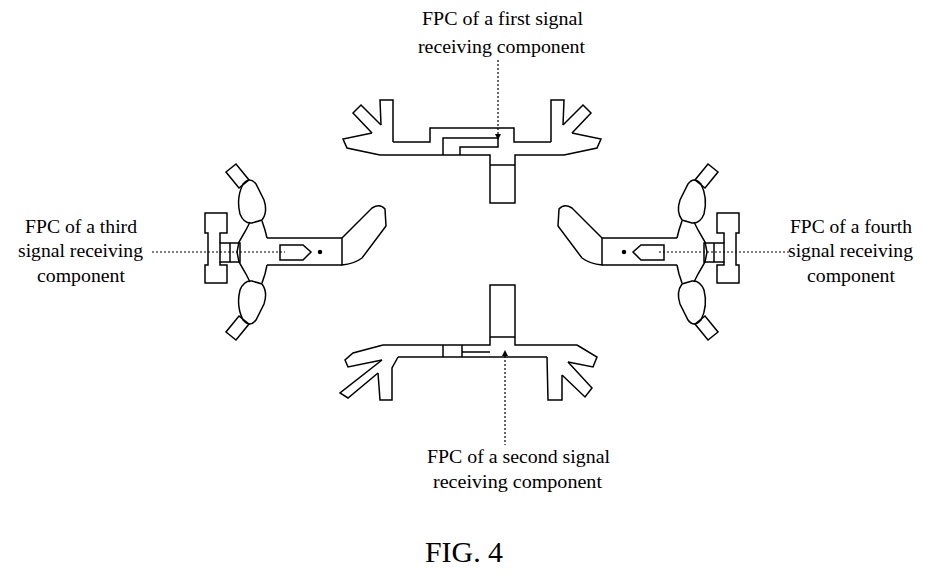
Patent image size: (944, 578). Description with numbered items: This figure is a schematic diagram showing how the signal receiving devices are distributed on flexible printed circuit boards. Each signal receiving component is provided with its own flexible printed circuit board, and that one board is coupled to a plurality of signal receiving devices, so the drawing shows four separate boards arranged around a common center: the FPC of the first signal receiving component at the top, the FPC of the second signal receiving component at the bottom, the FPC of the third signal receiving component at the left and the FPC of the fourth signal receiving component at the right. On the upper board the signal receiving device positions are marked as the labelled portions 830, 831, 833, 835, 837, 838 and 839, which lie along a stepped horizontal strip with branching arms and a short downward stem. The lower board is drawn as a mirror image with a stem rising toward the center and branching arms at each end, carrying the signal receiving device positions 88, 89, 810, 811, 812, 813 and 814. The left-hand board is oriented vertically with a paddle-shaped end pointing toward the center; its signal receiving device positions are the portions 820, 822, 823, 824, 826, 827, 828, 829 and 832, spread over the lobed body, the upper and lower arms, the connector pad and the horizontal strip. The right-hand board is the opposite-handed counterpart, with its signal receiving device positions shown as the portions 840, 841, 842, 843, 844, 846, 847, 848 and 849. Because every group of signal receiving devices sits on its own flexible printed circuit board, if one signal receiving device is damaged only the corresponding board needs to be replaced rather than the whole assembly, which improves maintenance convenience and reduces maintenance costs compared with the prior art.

The main body of FPC of second signal receiving component 88 is at (480, 329).
The left short arm of second FPC 89 is at (353, 356).
The left long arm of second FPC 810 is at (358, 379).
The left stub of second FPC 811 is at (397, 383).
The right stub of second FPC 812 is at (543, 381).
The right long arm of second FPC 813 is at (582, 384).
The right short arm of second FPC 814 is at (594, 357).
The paddle end of third FPC 820 is at (358, 214).
The upper lobe of third FPC 822 is at (252, 201).
The central body of third FPC 823 is at (237, 252).
The upper connector pad of third FPC 824 is at (215, 221).
The lower connector pad of third FPC 826 is at (214, 281).
The lower lobe of third FPC 827 is at (252, 302).
The lower arm of third FPC 828 is at (241, 332).
The horizontal strip of third FPC 829 is at (304, 256).
The upper arm of third FPC 832 is at (238, 167).
The lower-left arm of first FPC 830 is at (355, 151).
The central body and stem of first FPC 831 is at (472, 165).
The lower-right arm of first FPC 833 is at (582, 150).
The left stub of first FPC 835 is at (388, 117).
The right stub of first FPC 837 is at (544, 117).
The upper-right arm of first FPC 838 is at (577, 114).
The upper-left arm of first FPC 839 is at (355, 119).
The paddle end of fourth FPC 840 is at (580, 211).
The lower lobe of fourth FPC 841 is at (691, 302).
The upper lobe of fourth FPC 842 is at (691, 201).
The central body of fourth FPC 843 is at (706, 252).
The upper connector pad of fourth FPC 844 is at (728, 224).
The lower connector pad of fourth FPC 846 is at (728, 279).
The upper arm of fourth FPC 847 is at (703, 171).
The horizontal strip of fourth FPC 848 is at (639, 257).
The lower arm of fourth FPC 849 is at (706, 333).